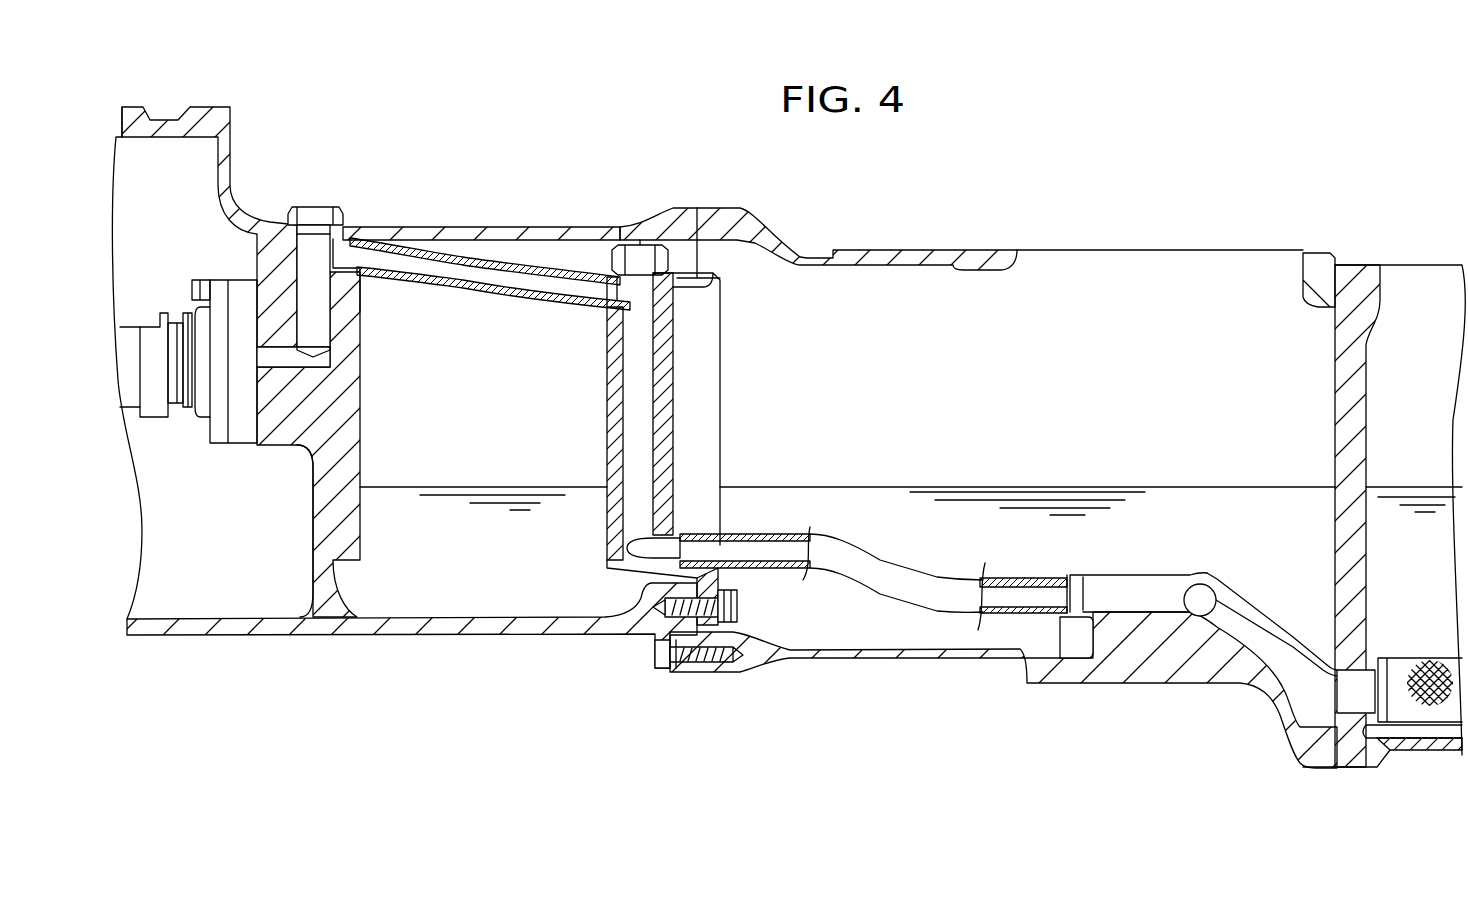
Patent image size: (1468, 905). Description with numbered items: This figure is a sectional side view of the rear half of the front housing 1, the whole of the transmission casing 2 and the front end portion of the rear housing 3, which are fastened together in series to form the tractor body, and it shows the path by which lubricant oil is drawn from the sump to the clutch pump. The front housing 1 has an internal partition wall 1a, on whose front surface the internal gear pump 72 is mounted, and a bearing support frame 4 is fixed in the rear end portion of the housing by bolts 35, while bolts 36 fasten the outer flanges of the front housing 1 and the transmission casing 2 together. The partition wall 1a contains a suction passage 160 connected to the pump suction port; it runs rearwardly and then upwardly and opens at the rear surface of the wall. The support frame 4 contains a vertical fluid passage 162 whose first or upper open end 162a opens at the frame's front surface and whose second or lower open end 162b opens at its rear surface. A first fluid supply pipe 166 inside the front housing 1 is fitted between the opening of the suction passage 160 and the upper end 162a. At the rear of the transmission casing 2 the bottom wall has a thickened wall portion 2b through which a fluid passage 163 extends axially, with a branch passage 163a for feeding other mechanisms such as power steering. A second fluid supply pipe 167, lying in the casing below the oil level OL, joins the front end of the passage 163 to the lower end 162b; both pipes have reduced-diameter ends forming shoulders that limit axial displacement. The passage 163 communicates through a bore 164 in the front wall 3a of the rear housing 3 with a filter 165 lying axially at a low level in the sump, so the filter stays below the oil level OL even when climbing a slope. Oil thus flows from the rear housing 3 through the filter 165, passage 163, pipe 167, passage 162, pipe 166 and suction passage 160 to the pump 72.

The front housing 1 is at (460, 627).
The partition wall 1a is at (320, 522).
The transmission casing 2 is at (1040, 673).
The thickened wall portion 2b is at (1143, 580).
The rear housing 3 is at (1423, 740).
The front wall 3a is at (1345, 388).
The bearing support frame 4 is at (608, 402).
The bolts 35 is at (737, 605).
The bolts 36 is at (653, 652).
The internal gear pump 72 is at (238, 430).
The suction passage 160 is at (273, 357).
The fluid passage 162 is at (643, 427).
The first or upper open end 162a is at (633, 268).
The second or lower open end 162b is at (683, 548).
The fluid passage 163 is at (1253, 637).
The branch passage 163a is at (1207, 598).
The bore 164 is at (1352, 693).
The filter 165 is at (1400, 673).
The first fluid supply pipe 166 is at (518, 265).
The second fluid supply pipe 167 is at (880, 528).
The oil level OL is at (1105, 477).